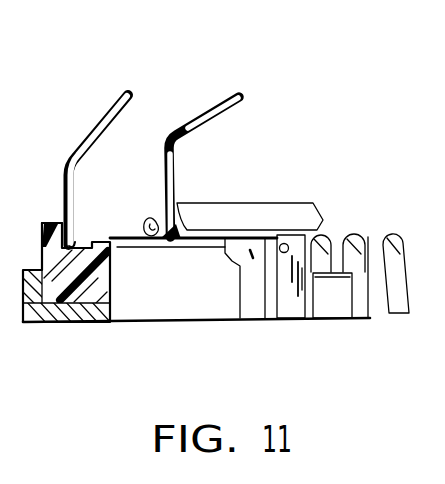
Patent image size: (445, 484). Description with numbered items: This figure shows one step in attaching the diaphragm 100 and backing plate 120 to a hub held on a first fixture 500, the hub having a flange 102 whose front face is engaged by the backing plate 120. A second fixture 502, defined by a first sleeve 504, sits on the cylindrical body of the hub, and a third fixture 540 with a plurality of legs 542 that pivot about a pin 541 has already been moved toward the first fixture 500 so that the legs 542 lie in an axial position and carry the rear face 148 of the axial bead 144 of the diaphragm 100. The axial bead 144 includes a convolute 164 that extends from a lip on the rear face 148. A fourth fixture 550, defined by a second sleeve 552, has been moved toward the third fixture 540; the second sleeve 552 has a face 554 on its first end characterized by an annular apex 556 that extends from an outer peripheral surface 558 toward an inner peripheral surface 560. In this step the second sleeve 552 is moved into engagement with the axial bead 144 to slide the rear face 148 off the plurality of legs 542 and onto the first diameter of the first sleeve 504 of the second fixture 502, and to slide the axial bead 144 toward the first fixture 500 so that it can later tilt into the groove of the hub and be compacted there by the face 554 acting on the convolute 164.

The diaphragm 100 is at (240, 99).
The flange 102 is at (50, 220).
The backing plate 120 is at (108, 118).
The axial bead 144 is at (150, 217).
The rear face 148 is at (163, 240).
The convolute 164 is at (164, 157).
The first fixture 500 is at (47, 322).
The second fixture 502 is at (347, 310).
The first sleeve 504 is at (128, 305).
The third fixture 540 is at (297, 300).
The pin 541 is at (288, 245).
The legs 542 is at (265, 252).
The fourth fixture 550 is at (314, 196).
The second sleeve 552 is at (303, 202).
The face 554 is at (200, 203).
The annular apex 556 is at (180, 203).
The outer peripheral surface 558 is at (257, 202).
The inner peripheral surface 560 is at (282, 202).